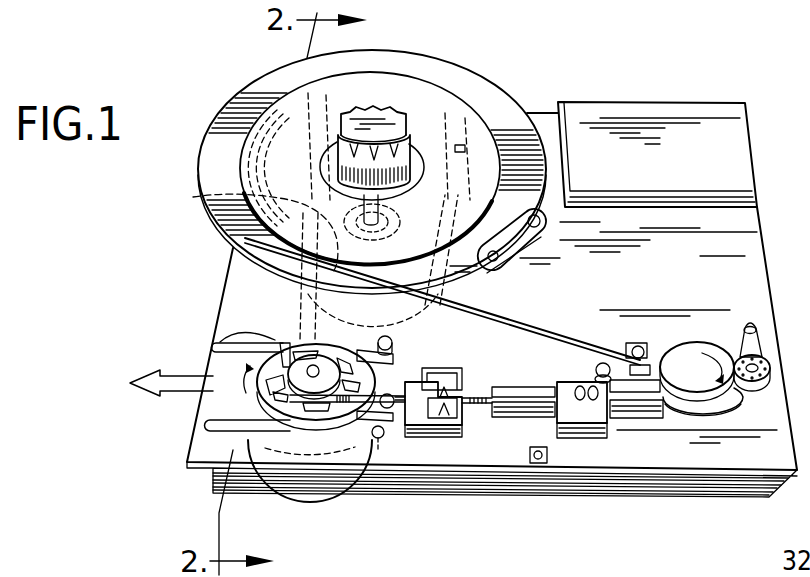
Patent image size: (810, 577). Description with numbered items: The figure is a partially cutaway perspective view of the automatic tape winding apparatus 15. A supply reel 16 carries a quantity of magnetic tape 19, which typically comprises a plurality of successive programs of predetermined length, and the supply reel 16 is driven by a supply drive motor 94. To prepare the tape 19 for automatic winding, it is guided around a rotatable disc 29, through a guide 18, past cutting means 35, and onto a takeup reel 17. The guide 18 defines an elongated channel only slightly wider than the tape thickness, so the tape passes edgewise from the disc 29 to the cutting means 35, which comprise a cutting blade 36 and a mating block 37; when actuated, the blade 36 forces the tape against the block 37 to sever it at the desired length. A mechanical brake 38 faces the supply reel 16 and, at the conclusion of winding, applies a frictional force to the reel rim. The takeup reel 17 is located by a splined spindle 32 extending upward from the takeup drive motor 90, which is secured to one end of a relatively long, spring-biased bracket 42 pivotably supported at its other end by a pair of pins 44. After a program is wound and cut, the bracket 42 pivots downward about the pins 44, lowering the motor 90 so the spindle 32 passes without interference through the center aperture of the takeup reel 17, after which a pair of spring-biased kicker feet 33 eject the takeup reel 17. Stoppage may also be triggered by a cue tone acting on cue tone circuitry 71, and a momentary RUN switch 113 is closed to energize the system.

The tape winding apparatus 15 is at (645, 65).
The supply reel 16 is at (428, 62).
The takeup reel 17 is at (257, 455).
The guide 18 is at (514, 398).
The magnetic tape 19 is at (245, 137).
The rotatable disc 29 is at (697, 398).
The spindle 32 is at (228, 336).
The kicker feet 33 is at (303, 323).
The cutting means 35 is at (465, 416).
The cutting blade 36 is at (440, 416).
The mating block 37 is at (462, 383).
The mechanical brake 38 is at (518, 208).
The bracket 42 is at (416, 328).
The pins 44 is at (262, 78).
The cue tone circuitry 71 is at (600, 416).
The takeup drive motor 90 is at (313, 502).
The supply drive motor 94 is at (218, 195).
The RUN switch 113 is at (540, 465).